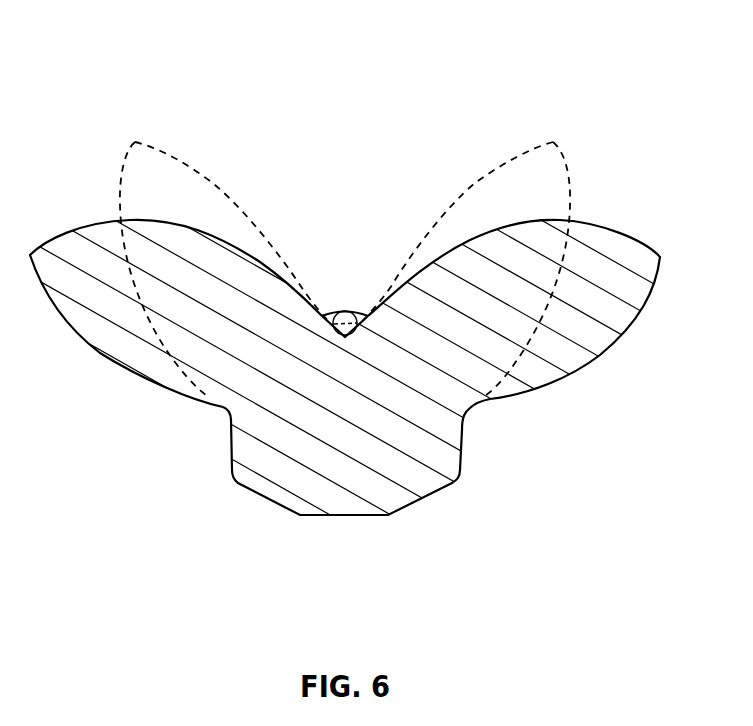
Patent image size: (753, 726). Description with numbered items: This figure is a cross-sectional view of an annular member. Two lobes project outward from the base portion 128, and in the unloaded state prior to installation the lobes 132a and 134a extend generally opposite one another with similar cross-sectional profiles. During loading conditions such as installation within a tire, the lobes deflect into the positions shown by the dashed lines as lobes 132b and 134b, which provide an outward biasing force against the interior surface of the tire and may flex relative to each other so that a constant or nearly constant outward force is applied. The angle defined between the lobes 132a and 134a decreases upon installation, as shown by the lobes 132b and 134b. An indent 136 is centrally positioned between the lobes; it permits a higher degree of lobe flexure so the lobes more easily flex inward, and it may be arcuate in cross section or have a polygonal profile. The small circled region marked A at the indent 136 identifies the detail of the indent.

The base portion 128 is at (413, 473).
The lobe (unloaded state) 132a is at (153, 356).
The lobe (deflected state) 132b is at (212, 180).
The lobe (unloaded state) 134a is at (600, 263).
The lobe (deflected state) 134b is at (567, 173).
The indent 136 is at (327, 313).
The detail region A is at (357, 313).